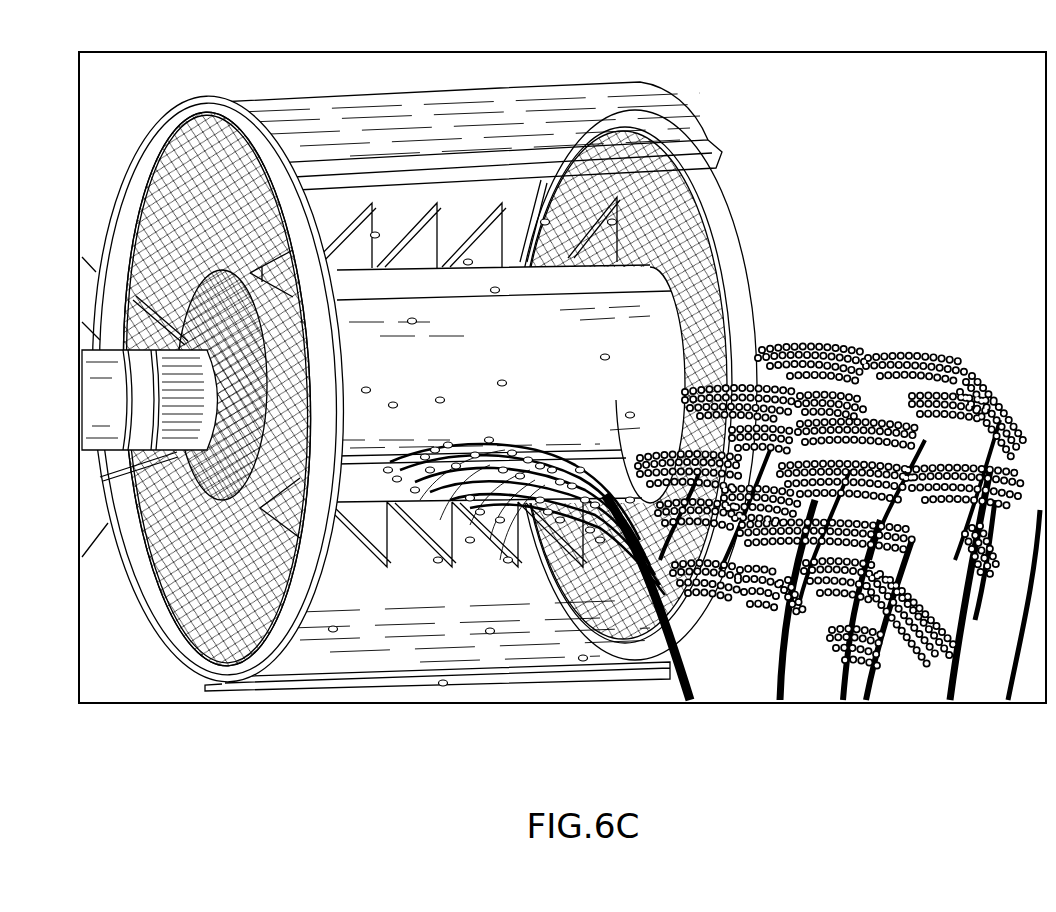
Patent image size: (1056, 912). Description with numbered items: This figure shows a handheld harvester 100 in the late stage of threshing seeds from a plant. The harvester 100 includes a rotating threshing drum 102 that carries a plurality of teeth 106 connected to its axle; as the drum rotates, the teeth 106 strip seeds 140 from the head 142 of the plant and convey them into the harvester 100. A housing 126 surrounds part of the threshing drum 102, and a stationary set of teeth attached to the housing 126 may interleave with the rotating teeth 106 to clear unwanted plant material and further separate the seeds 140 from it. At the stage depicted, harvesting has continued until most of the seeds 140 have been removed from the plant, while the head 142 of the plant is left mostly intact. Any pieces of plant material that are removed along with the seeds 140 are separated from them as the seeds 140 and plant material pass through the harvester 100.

The harvester 100 is at (128, 84).
The threshing drum 102 is at (730, 291).
The plurality of teeth 106 is at (610, 243).
The housing 126 is at (673, 120).
The seeds 140 is at (898, 352).
The head 142 is at (623, 480).